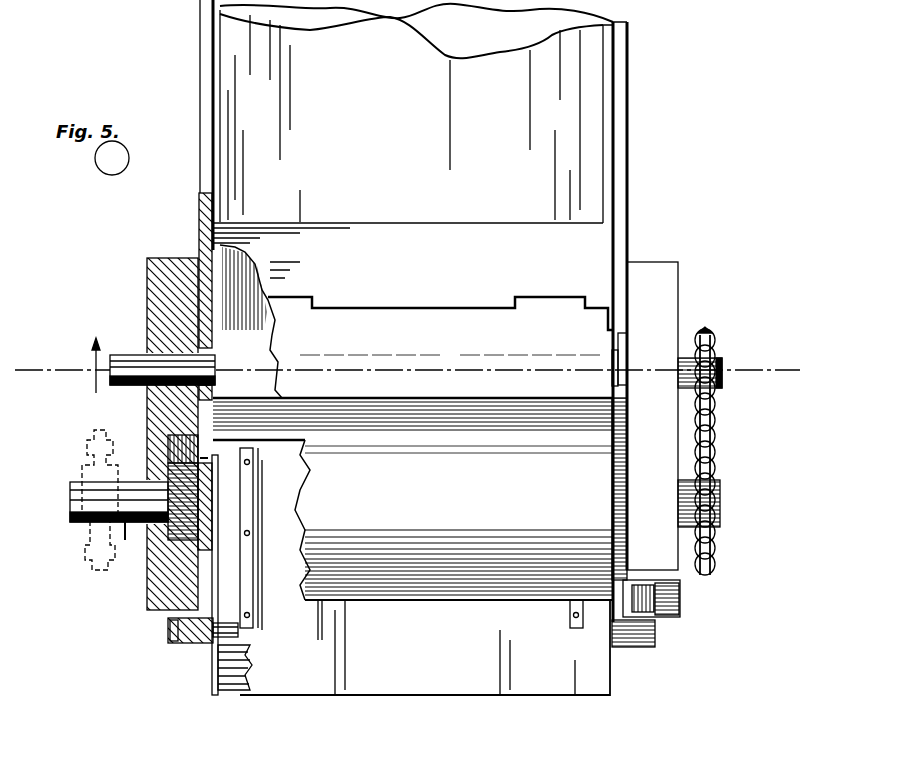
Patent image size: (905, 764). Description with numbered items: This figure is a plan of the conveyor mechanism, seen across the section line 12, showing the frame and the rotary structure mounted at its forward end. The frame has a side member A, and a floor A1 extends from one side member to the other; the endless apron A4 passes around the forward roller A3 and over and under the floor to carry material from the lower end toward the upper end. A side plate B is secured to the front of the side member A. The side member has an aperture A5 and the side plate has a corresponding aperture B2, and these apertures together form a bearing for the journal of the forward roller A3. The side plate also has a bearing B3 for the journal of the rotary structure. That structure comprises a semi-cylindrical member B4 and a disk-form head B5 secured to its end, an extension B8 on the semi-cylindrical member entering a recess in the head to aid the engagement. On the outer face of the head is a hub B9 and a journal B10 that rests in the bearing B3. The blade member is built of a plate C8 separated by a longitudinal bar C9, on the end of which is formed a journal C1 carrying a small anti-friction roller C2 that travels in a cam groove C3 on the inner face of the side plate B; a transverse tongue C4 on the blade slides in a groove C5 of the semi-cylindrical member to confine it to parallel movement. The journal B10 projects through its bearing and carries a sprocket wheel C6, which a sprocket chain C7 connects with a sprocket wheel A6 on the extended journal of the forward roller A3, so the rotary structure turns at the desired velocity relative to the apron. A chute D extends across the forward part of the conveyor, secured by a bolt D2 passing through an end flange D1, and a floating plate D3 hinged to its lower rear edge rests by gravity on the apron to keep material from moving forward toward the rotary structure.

The side member A is at (200, 62).
The floor A1 is at (416, 31).
The forward roller A3 is at (160, 290).
The endless apron A4 is at (150, 226).
The aperture A5 is at (175, 348).
The sprocket wheel A6 is at (718, 355).
The side plate B is at (665, 273).
The aperture B2 is at (163, 382).
The bearing B3 is at (175, 527).
The semi-cylindrical member B4 is at (412, 499).
The disk-form head B5 is at (617, 492).
The extension B8 is at (588, 763).
The hub B9 is at (178, 620).
The journal B10 is at (150, 520).
The journal C1 is at (215, 648).
The anti-friction roller C2 is at (187, 648).
The cam groove C3 is at (168, 450).
The transverse tongue C4 is at (255, 612).
The groove C5 is at (468, 763).
The sprocket wheel C6 is at (85, 545).
The sprocket chain C7 is at (718, 443).
The plate C8 is at (327, 420).
The longitudinal bar C9 is at (225, 690).
The chute D is at (447, 369).
The end flange D1 is at (622, 337).
The bolt D2 is at (612, 358).
The floating plate D3 is at (440, 292).
The section line 12 is at (407, 362).